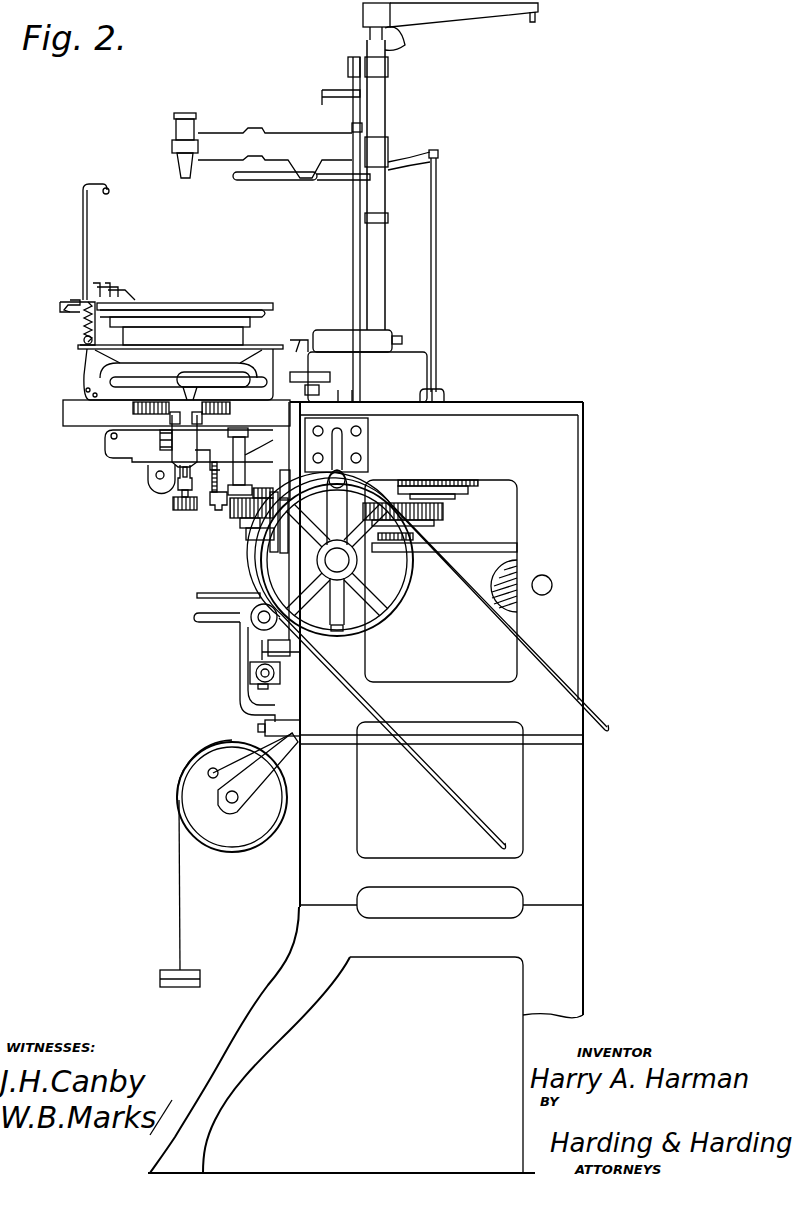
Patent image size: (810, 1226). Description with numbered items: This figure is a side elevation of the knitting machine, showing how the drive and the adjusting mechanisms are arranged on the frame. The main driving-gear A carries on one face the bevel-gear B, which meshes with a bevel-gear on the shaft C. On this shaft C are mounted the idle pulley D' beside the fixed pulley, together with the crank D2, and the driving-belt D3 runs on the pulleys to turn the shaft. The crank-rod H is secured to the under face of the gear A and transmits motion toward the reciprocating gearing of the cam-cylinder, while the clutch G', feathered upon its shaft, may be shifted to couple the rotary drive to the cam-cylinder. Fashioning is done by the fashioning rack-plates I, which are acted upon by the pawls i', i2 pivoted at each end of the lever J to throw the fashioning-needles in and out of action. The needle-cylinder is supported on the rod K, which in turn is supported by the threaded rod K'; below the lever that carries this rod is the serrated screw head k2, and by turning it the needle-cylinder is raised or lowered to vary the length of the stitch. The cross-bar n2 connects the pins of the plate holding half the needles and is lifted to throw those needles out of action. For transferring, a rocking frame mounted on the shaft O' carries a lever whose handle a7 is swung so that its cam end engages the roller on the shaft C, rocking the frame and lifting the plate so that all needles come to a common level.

The clutch G' is at (171, 292).
The fashioning rack-plates I is at (130, 410).
The pawl i' is at (164, 421).
The pawl i2 is at (205, 410).
The lever J is at (143, 442).
The rod K is at (133, 483).
The rod K' is at (152, 495).
The screw head k2 is at (178, 512).
The cross-bar n2 is at (228, 508).
The main driving-gear A is at (230, 522).
The bevel-gear B is at (252, 535).
The crank D2 is at (345, 500).
The crank-rod H is at (468, 548).
The idle pulley D' is at (353, 560).
The shaft C is at (337, 567).
The handle a7 is at (214, 595).
The shaft O' is at (252, 670).
The driving-belt D3 is at (372, 716).